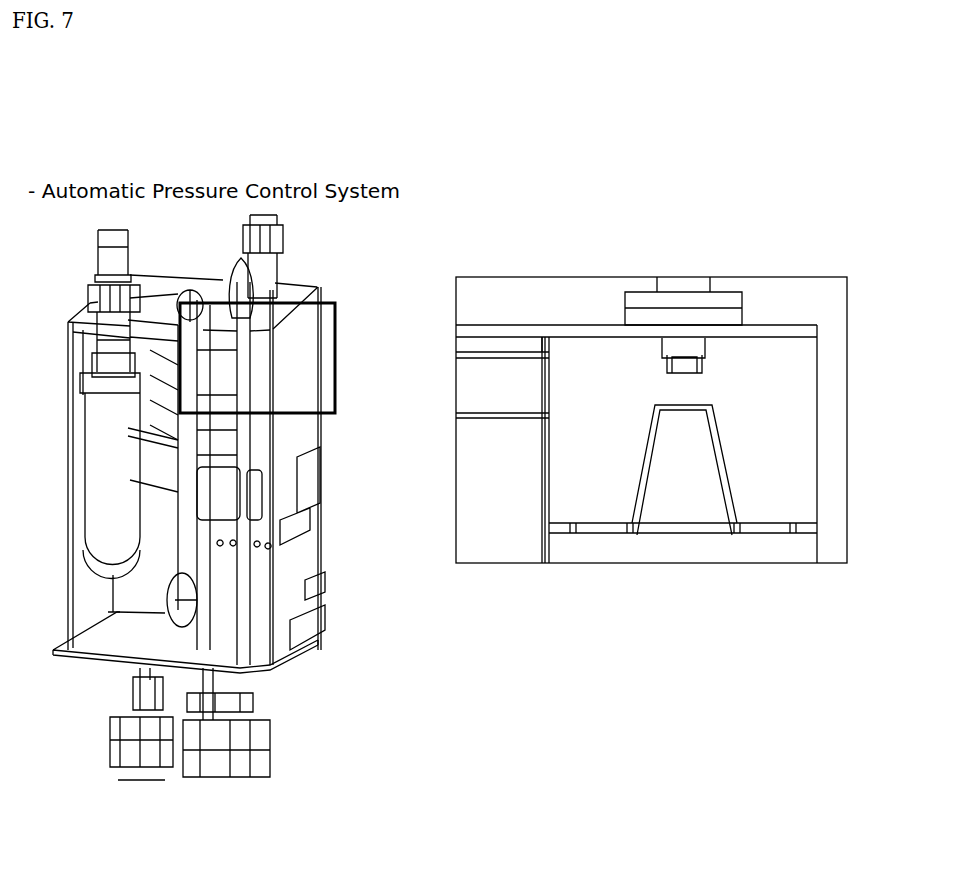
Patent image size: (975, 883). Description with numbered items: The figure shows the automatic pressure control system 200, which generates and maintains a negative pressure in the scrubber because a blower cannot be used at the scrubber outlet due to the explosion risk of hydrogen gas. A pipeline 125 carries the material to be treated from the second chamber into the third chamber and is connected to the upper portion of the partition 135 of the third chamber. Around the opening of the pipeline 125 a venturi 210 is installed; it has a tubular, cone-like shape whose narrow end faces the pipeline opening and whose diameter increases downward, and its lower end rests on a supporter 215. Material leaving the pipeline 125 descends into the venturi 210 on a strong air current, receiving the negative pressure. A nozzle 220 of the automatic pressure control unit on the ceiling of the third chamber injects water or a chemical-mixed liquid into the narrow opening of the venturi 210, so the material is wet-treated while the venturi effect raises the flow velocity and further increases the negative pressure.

The automatic pressure control system 200 is at (648, 404).
The pipeline 125 is at (467, 397).
The partition 135 is at (545, 543).
The venturi 210 is at (730, 503).
The supporter 215 is at (768, 533).
The nozzle 220 is at (705, 368).